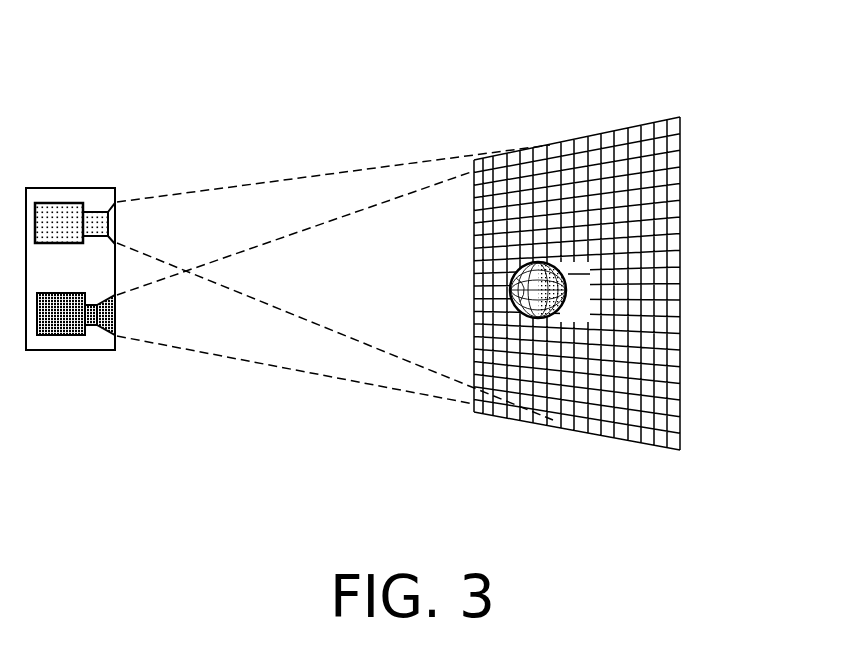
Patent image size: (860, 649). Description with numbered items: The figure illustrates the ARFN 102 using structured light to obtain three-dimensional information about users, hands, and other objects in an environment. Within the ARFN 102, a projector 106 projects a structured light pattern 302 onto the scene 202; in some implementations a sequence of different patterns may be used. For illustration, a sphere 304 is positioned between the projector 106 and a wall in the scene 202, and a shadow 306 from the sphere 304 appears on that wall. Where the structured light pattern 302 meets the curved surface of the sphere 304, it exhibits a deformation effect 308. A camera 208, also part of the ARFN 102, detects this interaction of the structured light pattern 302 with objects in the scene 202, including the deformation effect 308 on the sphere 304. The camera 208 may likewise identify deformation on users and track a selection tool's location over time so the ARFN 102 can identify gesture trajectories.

The ARFN 102 is at (53, 350).
The projector 106 is at (58, 223).
The camera 208 is at (73, 313).
The structured light pattern 302 is at (470, 173).
The sphere 304 is at (533, 263).
The shadow 306 is at (577, 282).
The deformation effect 308 is at (519, 308).
The scene 202 is at (695, 450).